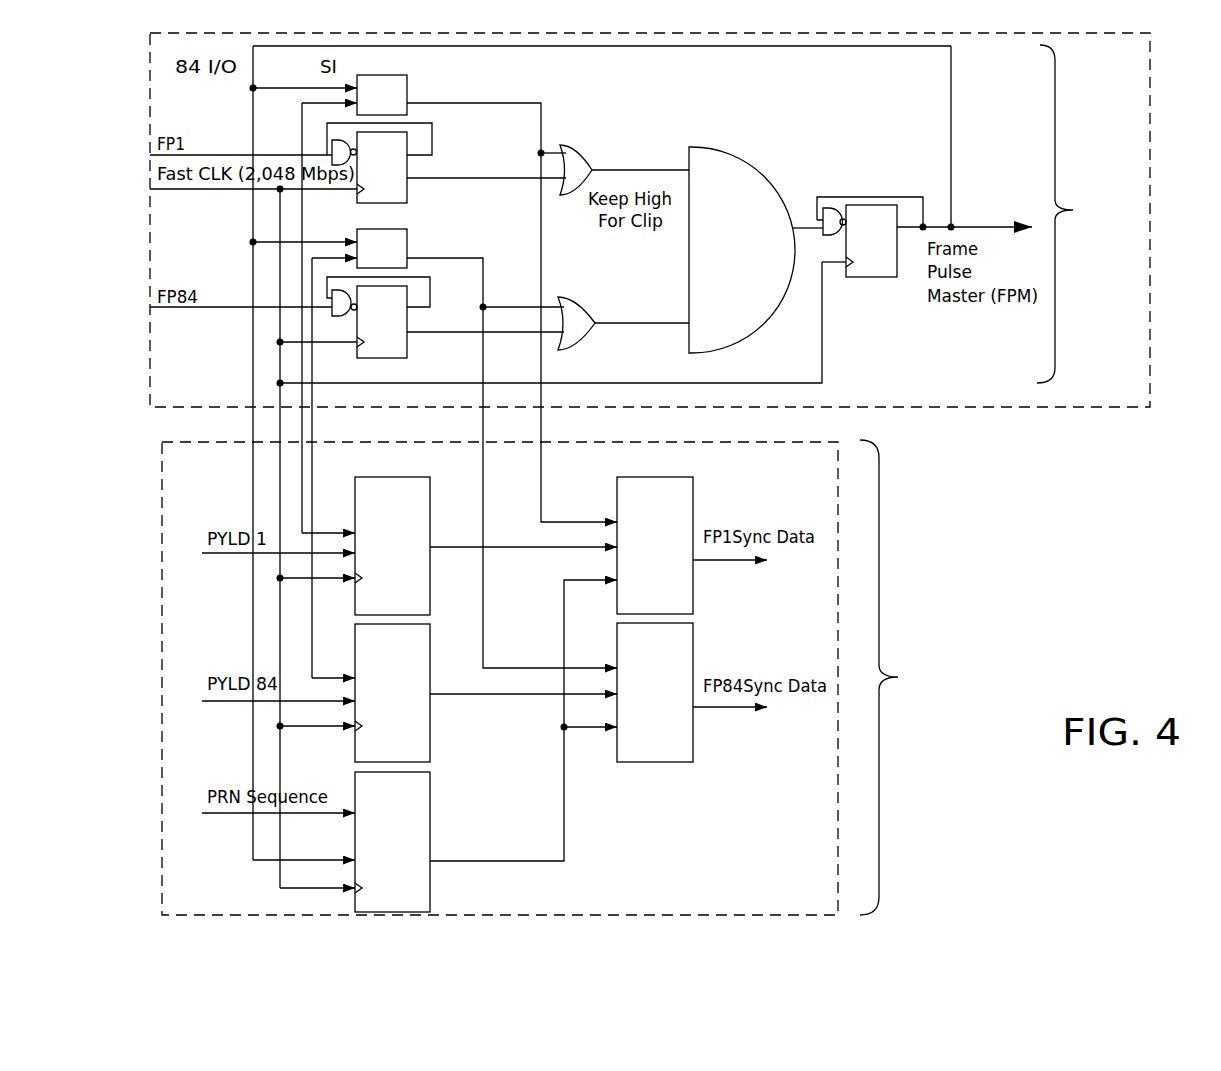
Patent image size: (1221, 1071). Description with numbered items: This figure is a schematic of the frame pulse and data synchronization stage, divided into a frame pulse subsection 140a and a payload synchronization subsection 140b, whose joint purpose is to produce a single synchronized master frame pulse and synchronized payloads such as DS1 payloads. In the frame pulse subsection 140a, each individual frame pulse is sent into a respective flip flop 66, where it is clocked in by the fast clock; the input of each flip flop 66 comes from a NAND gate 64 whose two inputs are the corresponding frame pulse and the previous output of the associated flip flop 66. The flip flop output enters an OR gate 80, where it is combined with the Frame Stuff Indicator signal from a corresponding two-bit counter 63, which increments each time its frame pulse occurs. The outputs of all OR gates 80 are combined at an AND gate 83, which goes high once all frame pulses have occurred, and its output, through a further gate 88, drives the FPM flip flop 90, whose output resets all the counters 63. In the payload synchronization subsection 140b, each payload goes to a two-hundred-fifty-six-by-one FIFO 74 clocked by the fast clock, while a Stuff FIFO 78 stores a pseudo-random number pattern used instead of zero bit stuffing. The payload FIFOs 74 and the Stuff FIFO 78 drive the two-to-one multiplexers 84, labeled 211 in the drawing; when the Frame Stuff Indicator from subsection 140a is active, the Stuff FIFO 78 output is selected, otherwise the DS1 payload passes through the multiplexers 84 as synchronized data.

The 2-bit counter 63 is at (407, 90).
The NAND gate 64 is at (332, 299).
The flip flop 66 is at (407, 172).
The OR gate 80 is at (585, 147).
The AND gate 83 is at (771, 188).
The AND gate 88 is at (832, 207).
The FPM flip flop 90 is at (887, 277).
The 256-by-1 FIFO 74 is at (432, 568).
The Stuff FIFO 78 is at (430, 815).
The 2:1 multiplexer 84 is at (698, 606).
The 2:1 multiplexer Mux1 211 is at (741, 626).
The frame pulse subsection 140a is at (972, 408).
The payload synchronization subsection 140b is at (830, 432).